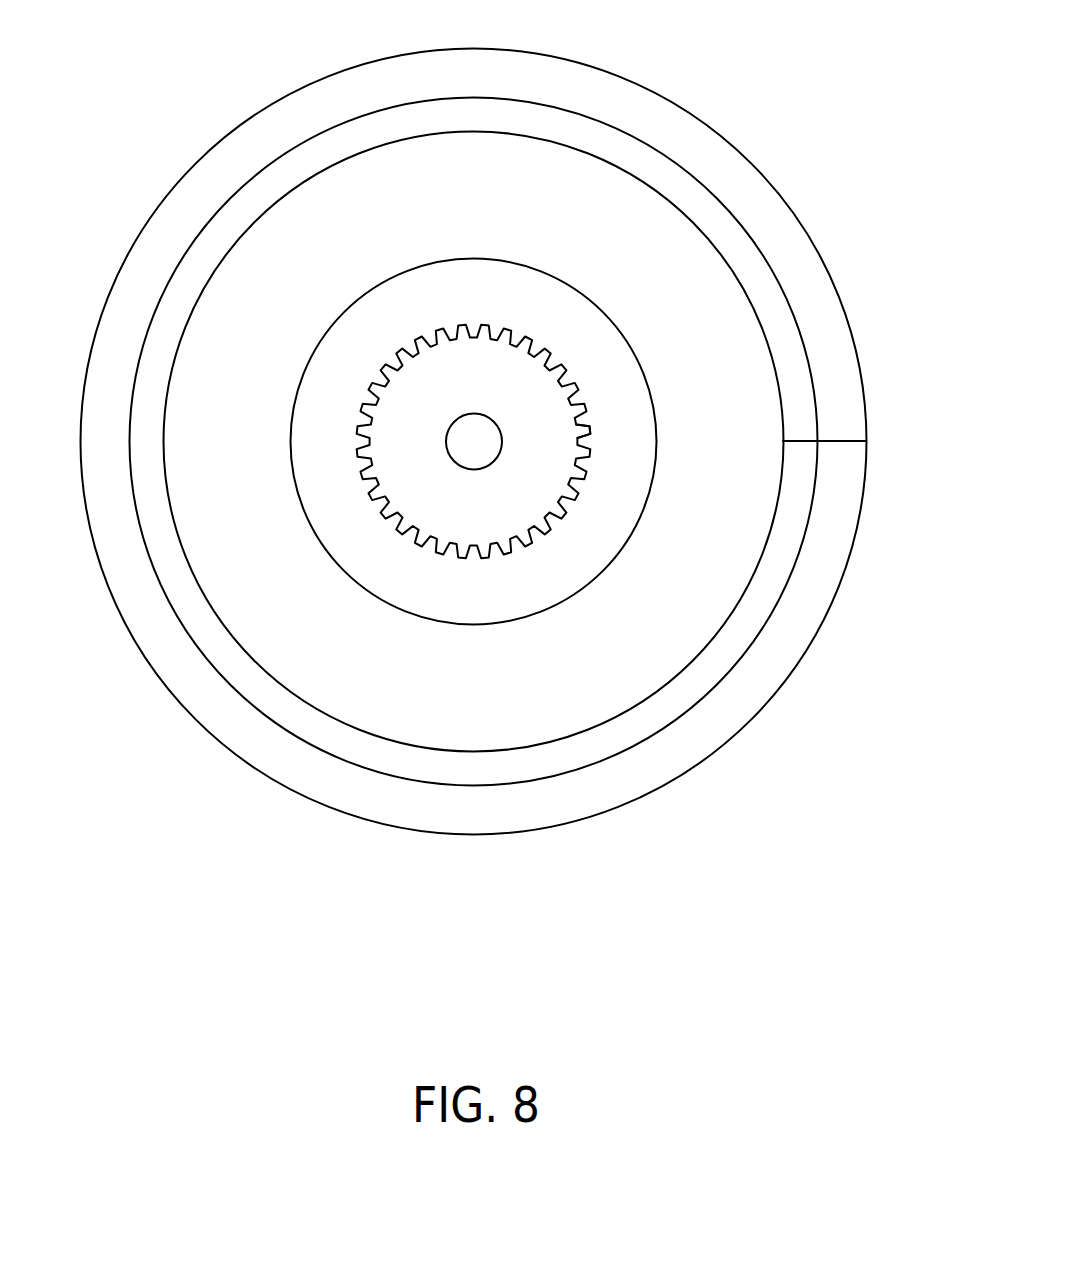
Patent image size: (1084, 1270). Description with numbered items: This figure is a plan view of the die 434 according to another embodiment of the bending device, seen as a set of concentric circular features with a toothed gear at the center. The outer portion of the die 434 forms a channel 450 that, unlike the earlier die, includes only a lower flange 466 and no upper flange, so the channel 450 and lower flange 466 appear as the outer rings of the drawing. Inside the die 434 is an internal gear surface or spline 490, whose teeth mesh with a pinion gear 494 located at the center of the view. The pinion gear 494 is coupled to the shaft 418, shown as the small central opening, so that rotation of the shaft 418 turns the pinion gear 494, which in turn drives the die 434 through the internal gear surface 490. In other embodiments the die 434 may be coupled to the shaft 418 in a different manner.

The die 434 is at (498, 423).
The channel 450 is at (695, 172).
The lower flange 466 is at (795, 209).
The pinion gear 494 is at (506, 386).
The internal gear surface 490 is at (588, 420).
The shaft 418 is at (472, 448).